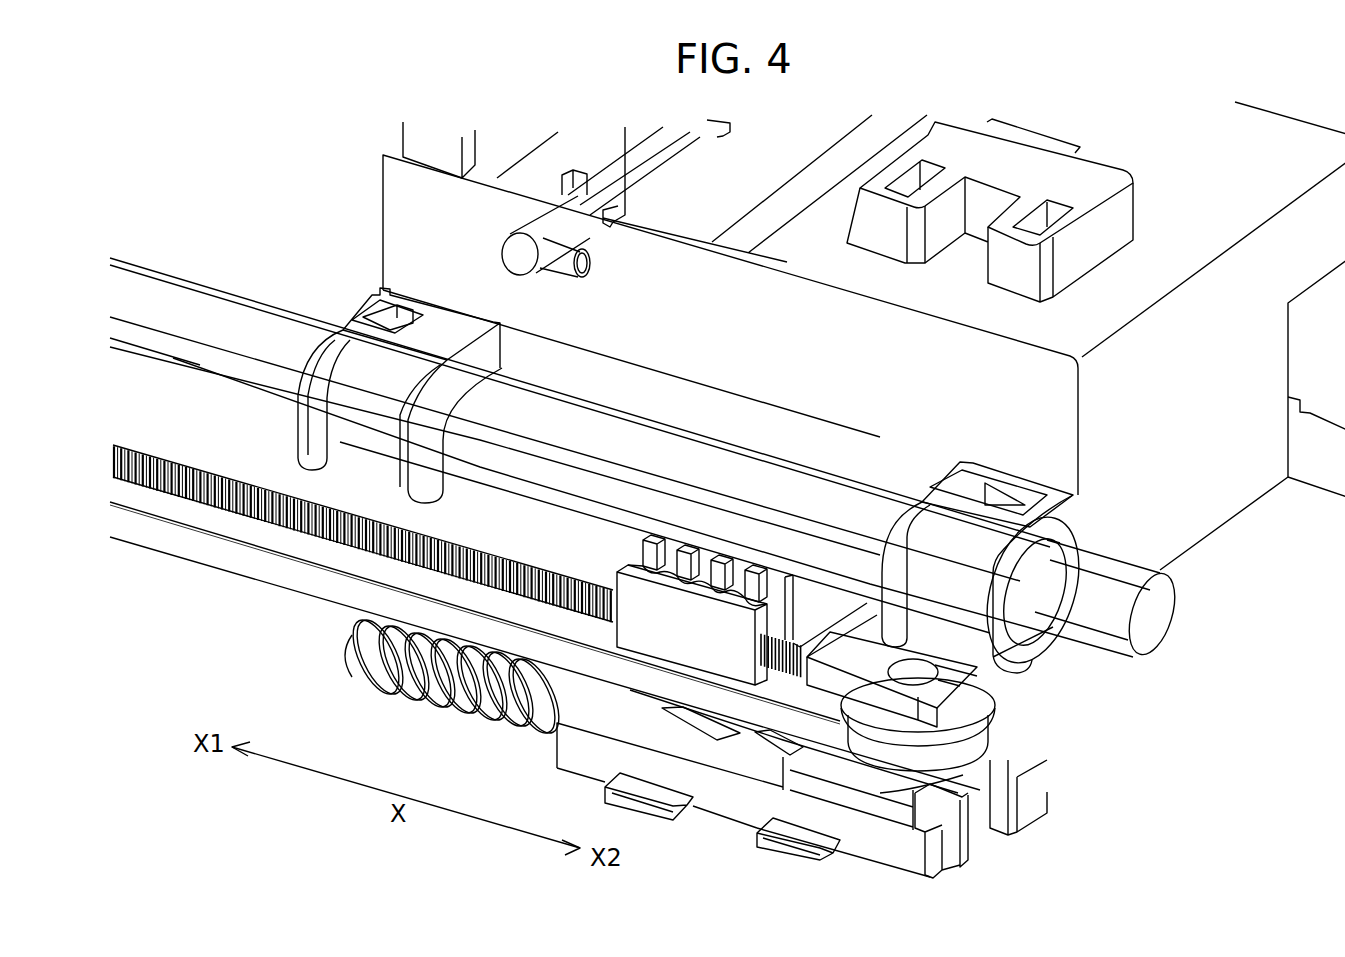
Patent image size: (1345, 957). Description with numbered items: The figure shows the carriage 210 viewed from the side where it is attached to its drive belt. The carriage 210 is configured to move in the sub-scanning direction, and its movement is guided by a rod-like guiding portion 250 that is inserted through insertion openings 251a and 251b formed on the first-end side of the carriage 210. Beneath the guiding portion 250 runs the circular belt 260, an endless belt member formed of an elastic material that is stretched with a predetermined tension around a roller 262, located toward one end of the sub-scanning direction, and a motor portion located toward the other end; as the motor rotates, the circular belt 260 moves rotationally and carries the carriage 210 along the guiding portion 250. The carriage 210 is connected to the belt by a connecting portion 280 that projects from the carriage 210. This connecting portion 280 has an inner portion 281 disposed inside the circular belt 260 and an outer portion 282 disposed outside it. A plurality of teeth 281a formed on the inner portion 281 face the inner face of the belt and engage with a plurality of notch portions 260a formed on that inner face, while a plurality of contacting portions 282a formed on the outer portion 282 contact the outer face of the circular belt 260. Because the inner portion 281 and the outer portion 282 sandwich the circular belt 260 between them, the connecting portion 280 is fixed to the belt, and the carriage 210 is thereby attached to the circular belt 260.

The carriage 210 is at (1262, 467).
The guiding portion 250 is at (253, 320).
The insertion opening 251a is at (500, 370).
The insertion opening 251b is at (1082, 540).
The circular belt 260 is at (213, 552).
The notch portions 260a is at (227, 477).
The roller 262 is at (1000, 685).
The connecting portion 280 is at (631, 602).
The inner portion 281 is at (660, 615).
The teeth 281a is at (748, 597).
The outer portion 282 is at (653, 545).
The contacting portions 282a is at (793, 577).